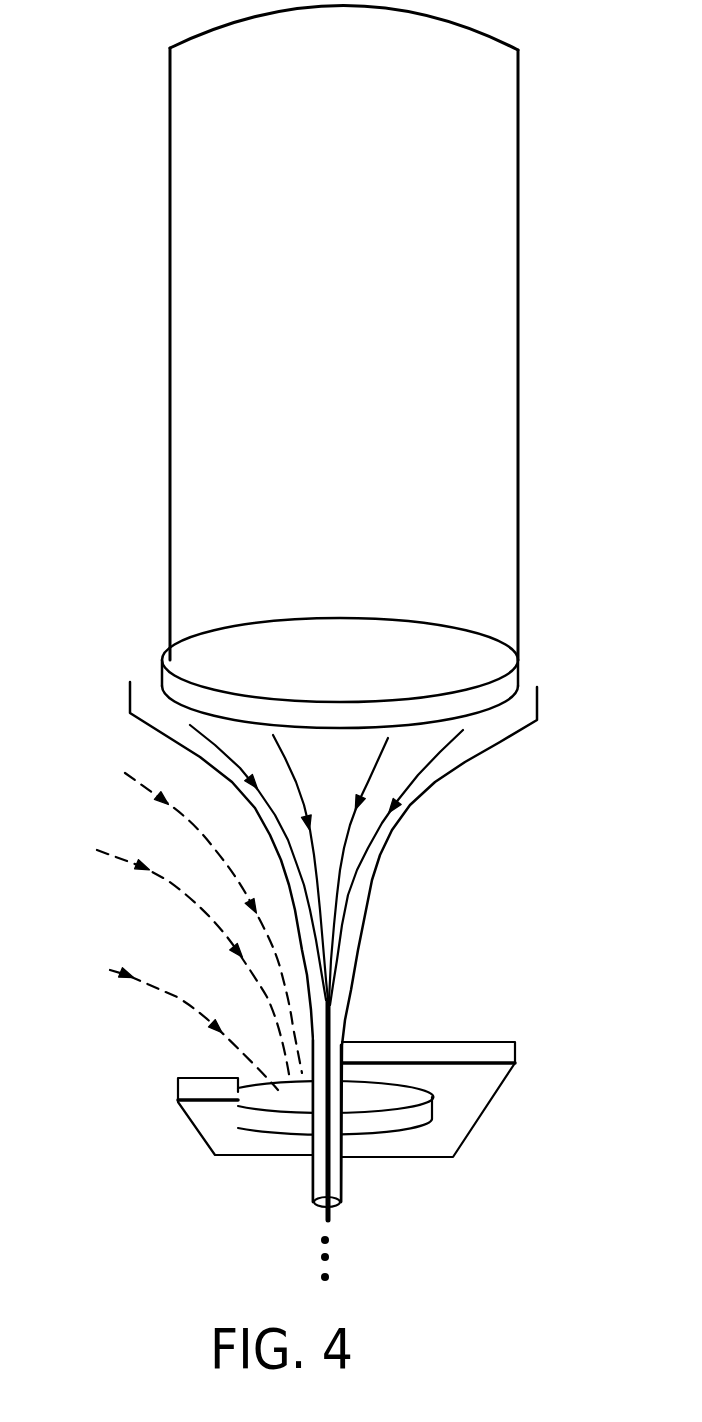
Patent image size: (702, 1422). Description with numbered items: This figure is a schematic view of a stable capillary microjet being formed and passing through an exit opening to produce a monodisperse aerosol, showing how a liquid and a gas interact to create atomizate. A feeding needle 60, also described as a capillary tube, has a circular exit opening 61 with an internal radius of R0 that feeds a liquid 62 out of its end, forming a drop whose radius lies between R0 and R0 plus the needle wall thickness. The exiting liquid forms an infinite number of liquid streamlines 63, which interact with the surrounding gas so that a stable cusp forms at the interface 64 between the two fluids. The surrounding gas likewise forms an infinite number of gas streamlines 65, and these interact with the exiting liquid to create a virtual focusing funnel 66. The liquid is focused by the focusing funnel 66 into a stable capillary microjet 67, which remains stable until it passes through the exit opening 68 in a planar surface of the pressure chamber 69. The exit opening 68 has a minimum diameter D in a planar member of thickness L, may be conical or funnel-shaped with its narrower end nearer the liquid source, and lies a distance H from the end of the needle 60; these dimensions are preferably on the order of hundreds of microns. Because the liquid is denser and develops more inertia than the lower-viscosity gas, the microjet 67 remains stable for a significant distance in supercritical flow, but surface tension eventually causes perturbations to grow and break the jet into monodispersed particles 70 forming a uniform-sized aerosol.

The feeding needle 60 is at (518, 466).
The circular exit opening 61 is at (477, 670).
The liquid 62 is at (313, 655).
The liquid streamlines 63 is at (370, 873).
The interface 64 is at (370, 905).
The gas streamlines 65 is at (165, 883).
The virtual focusing funnel 66 is at (350, 1000).
The stable capillary microjet 67 is at (337, 957).
The exit opening 68 is at (412, 1097).
The pressure chamber 69 is at (482, 1043).
The monodispersed particles 70 is at (329, 1277).